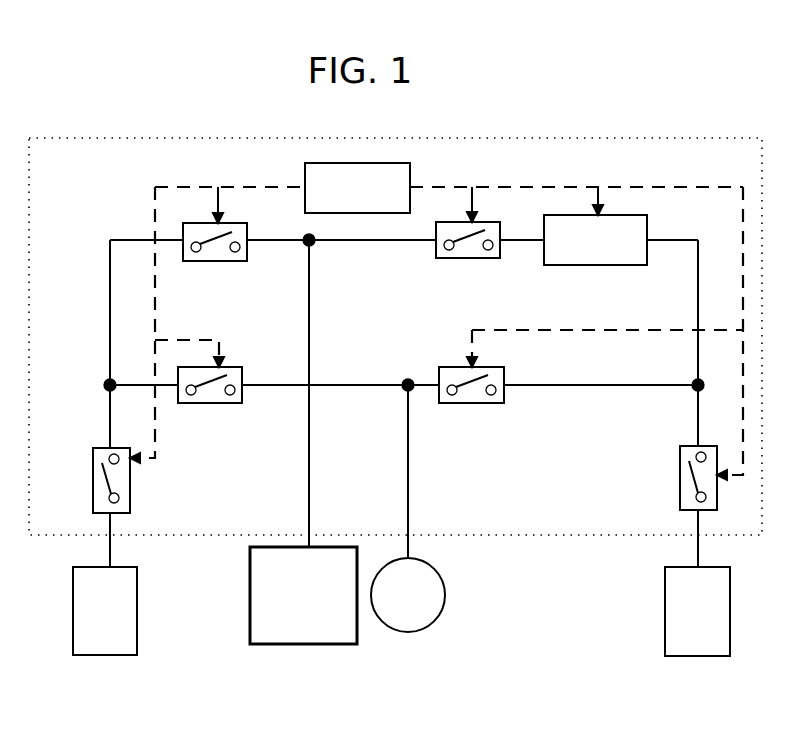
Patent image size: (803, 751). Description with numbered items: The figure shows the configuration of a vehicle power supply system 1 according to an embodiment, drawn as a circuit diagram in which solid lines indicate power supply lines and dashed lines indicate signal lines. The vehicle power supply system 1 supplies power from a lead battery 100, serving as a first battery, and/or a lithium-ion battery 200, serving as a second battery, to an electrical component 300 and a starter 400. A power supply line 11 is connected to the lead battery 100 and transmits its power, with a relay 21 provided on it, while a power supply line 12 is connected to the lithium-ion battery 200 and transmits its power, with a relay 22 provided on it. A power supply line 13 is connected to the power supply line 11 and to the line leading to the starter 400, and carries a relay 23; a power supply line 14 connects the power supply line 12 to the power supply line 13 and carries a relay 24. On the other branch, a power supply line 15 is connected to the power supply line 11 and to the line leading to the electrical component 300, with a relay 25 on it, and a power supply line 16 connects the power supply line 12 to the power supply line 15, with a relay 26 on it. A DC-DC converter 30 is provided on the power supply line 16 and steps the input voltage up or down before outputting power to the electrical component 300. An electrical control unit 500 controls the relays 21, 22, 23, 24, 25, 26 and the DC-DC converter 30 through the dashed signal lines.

The vehicle power supply system 1 is at (507, 535).
The power supply line 11 is at (110, 420).
The power supply line 12 is at (698, 418).
The power supply line 13 is at (368, 385).
The power supply line 14 is at (555, 385).
The power supply line 15 is at (110, 275).
The power supply line 16 is at (363, 240).
The relay 21 is at (130, 493).
The relay 22 is at (680, 510).
The relay 23 is at (223, 403).
The relay 24 is at (490, 403).
The relay 25 is at (210, 261).
The relay 26 is at (460, 258).
The DC-DC converter 30 is at (592, 265).
The lead battery 100 is at (137, 628).
The lithium-ion battery 200 is at (665, 656).
The electrical component 300 is at (315, 644).
The starter 400 is at (420, 630).
The electrical control unit (ECU) 500 is at (410, 163).